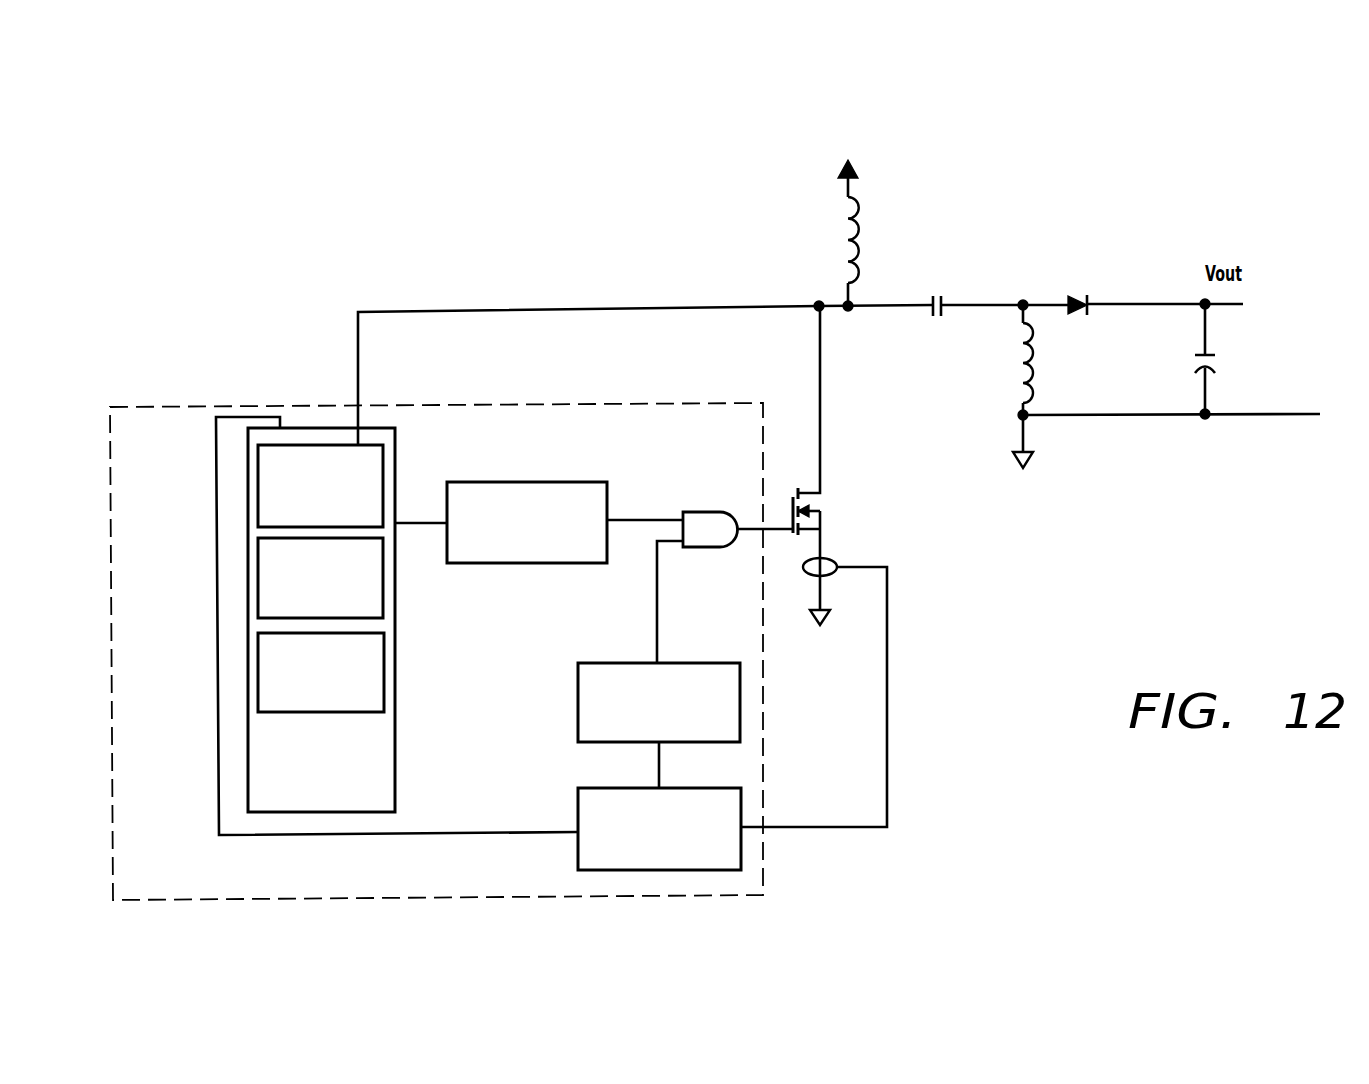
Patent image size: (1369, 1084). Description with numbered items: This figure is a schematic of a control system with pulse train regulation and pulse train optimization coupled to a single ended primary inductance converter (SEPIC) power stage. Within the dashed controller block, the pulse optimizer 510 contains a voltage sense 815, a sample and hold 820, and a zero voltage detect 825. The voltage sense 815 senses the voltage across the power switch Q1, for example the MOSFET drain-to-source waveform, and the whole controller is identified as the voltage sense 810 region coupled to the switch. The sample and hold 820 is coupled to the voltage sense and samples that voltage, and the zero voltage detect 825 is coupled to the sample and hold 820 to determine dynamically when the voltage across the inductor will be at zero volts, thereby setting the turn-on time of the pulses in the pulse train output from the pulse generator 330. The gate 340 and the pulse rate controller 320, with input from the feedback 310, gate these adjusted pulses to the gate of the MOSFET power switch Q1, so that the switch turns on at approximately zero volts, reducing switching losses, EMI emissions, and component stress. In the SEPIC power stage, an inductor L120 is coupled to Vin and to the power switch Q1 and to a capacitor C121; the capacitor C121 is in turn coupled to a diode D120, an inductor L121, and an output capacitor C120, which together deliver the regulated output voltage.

The voltage sense 810 is at (186, 406).
The voltage sense 815 is at (258, 487).
The sample and hold 820 is at (258, 580).
The zero voltage detect 825 is at (258, 672).
The pulse optimizer 510 is at (325, 812).
The pulse generator 330 is at (527, 563).
The gate 340 is at (705, 547).
The pulse rate controller 320 is at (578, 701).
The feedback 310 is at (578, 812).
The power switch Q1 is at (830, 465).
The inductor L120 is at (871, 231).
The capacitor C121 is at (970, 290).
The inductor L121 is at (1045, 386).
The diode D120 is at (1133, 288).
The capacitor C120 is at (1225, 359).